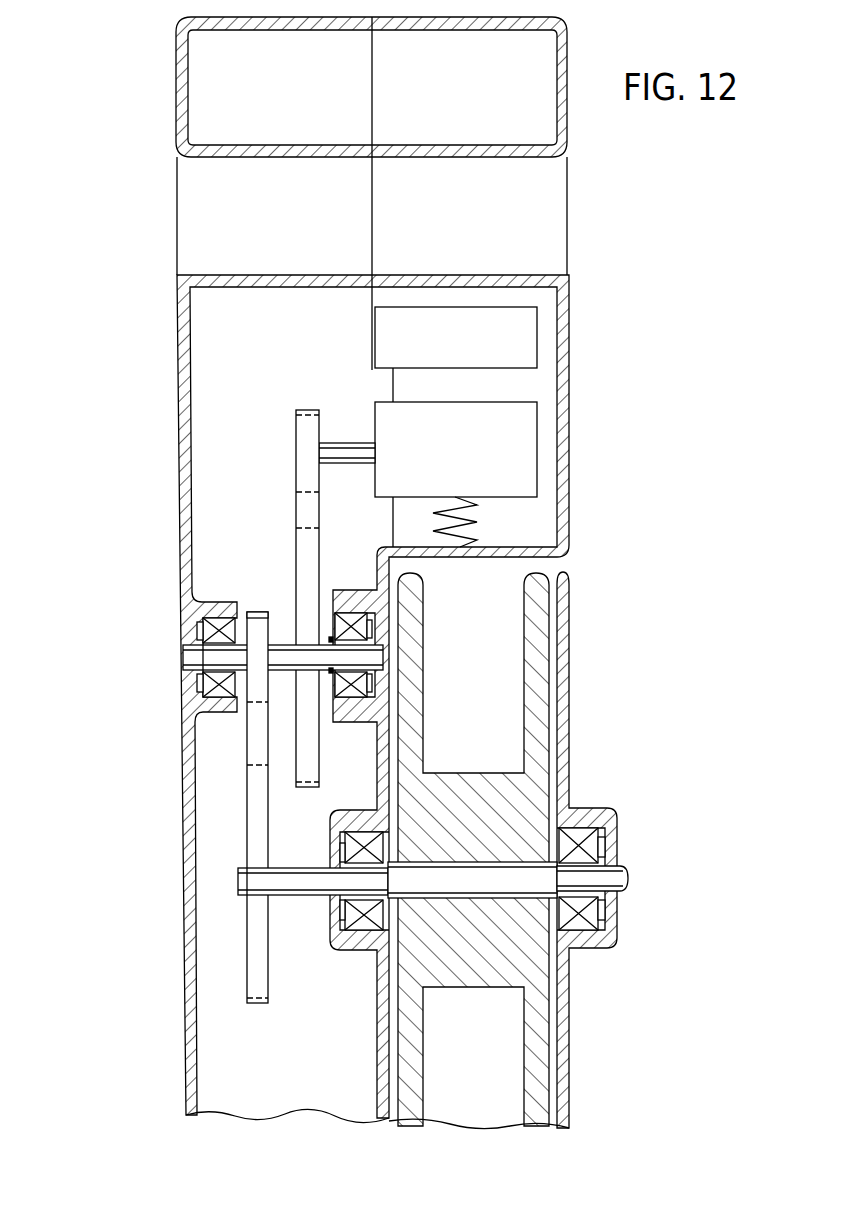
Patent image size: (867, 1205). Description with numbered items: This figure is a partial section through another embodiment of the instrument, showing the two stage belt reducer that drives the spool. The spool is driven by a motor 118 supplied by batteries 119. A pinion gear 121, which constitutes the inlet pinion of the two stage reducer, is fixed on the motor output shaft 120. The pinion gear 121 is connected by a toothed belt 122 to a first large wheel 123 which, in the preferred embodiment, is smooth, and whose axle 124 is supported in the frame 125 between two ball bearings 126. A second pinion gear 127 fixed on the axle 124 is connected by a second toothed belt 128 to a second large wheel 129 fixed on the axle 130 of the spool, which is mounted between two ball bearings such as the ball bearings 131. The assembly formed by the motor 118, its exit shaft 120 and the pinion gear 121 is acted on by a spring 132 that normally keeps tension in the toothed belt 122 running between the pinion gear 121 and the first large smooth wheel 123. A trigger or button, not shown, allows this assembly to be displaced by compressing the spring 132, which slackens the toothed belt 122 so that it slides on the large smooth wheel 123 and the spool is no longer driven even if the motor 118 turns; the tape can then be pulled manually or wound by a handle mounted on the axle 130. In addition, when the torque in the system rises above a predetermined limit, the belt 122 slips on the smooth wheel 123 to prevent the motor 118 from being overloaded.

The motor 118 is at (525, 430).
The batteries 119 is at (523, 332).
The motor output shaft 120 is at (342, 447).
The pinion gear 121 is at (297, 433).
The toothed belt 122 is at (300, 507).
The first large wheel 123 is at (305, 548).
The axle 124 is at (280, 653).
The frame 125 is at (567, 468).
The ball bearings 126 is at (357, 628).
The second pinion gear 127 is at (249, 610).
The second toothed belt 128 is at (253, 738).
The second large wheel 129 is at (260, 962).
The axle 130 is at (490, 873).
The ball bearings 131 is at (365, 923).
The spring 132 is at (470, 533).